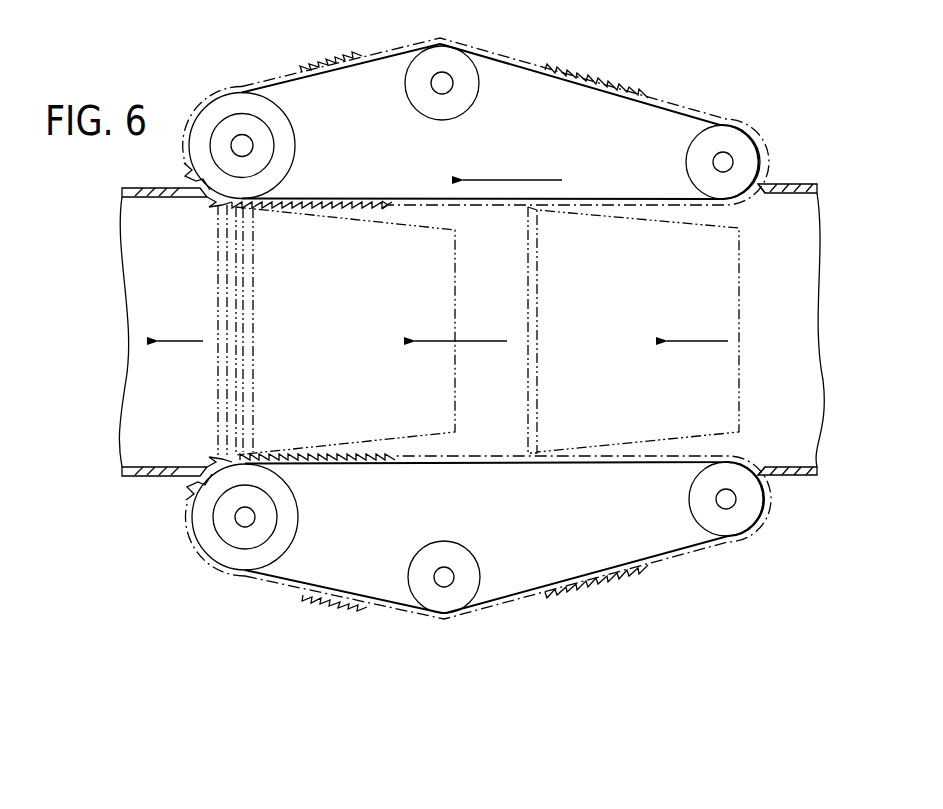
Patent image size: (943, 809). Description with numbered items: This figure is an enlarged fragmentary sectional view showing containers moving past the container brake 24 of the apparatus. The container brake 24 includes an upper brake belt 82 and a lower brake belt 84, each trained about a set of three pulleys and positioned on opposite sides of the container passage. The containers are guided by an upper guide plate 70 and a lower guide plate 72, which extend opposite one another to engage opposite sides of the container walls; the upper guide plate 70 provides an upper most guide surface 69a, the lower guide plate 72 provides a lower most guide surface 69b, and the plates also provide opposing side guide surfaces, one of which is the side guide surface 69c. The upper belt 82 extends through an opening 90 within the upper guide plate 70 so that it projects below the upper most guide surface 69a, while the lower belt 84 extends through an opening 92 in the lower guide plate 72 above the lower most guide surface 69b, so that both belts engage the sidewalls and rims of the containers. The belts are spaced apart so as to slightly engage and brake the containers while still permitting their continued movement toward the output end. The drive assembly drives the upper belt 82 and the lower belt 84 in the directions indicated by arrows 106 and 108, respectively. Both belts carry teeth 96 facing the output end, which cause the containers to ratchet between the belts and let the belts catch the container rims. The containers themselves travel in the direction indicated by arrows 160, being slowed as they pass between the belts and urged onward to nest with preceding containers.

The container brake 24 is at (443, 40).
The upper brake belt 82 is at (617, 88).
The lower brake belt 84 is at (573, 590).
The arrow 106 is at (516, 177).
The arrow 108 is at (465, 483).
The upper guide plate 70 is at (805, 186).
The lower guide plate 72 is at (800, 478).
The opening 90 is at (775, 185).
The opening 92 is at (776, 476).
The teeth 96 is at (213, 200).
The upper most guide surface 69a is at (790, 193).
The lower most guide surface 69b is at (800, 467).
The side guide surface 69c is at (800, 320).
The arrow 160 is at (190, 340).